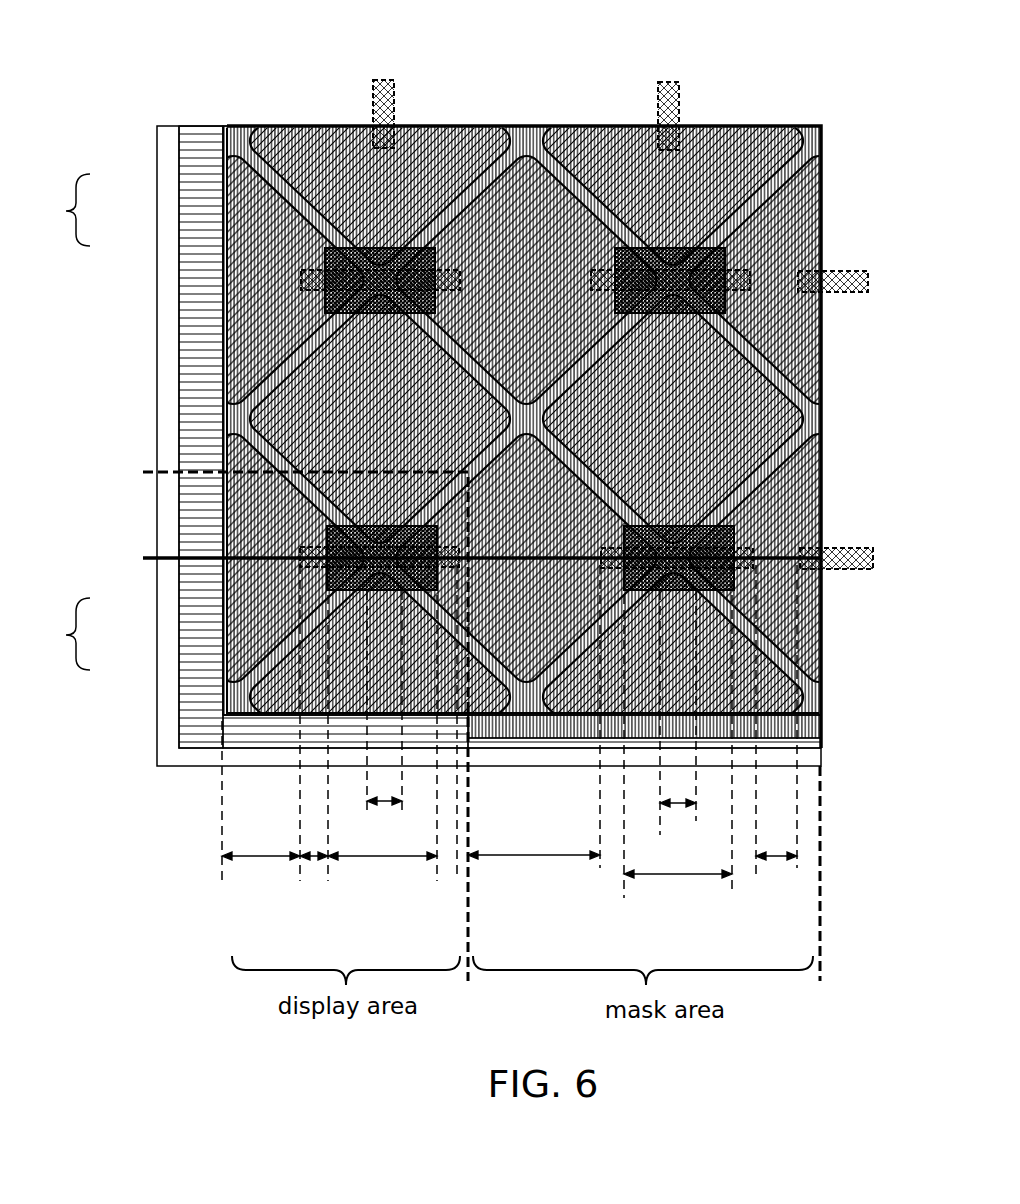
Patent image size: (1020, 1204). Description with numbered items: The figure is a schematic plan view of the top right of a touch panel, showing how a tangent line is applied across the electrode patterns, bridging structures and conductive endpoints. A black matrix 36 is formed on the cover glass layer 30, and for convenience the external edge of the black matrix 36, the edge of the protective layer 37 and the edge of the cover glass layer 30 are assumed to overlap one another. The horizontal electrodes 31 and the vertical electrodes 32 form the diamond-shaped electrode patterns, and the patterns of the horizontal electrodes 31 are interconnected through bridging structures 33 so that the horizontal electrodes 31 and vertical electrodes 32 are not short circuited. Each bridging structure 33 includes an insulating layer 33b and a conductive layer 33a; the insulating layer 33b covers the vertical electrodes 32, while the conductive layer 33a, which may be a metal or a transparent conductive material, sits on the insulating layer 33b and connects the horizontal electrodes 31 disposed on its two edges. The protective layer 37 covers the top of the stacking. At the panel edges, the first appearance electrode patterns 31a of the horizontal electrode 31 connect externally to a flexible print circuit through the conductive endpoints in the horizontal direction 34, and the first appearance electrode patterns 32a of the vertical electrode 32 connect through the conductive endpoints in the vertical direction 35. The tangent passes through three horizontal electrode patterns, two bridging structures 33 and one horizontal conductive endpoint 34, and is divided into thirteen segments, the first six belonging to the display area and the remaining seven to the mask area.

The cover glass layer 30 is at (168, 537).
The horizontal electrode 31 is at (218, 428).
The first appearance electrode pattern 31a is at (778, 207).
The vertical electrode 32 is at (265, 347).
The first appearance electrode pattern 32a is at (330, 150).
The bridging structure 33 is at (454, 420).
The conductive layer 33a is at (325, 250).
The insulating layer 33b is at (300, 272).
The conductive endpoint in the horizontal direction 34 is at (828, 262).
The conductive endpoint in the vertical direction 35 is at (364, 100).
The black matrix 36 is at (513, 124).
The protective layer 37 is at (170, 703).